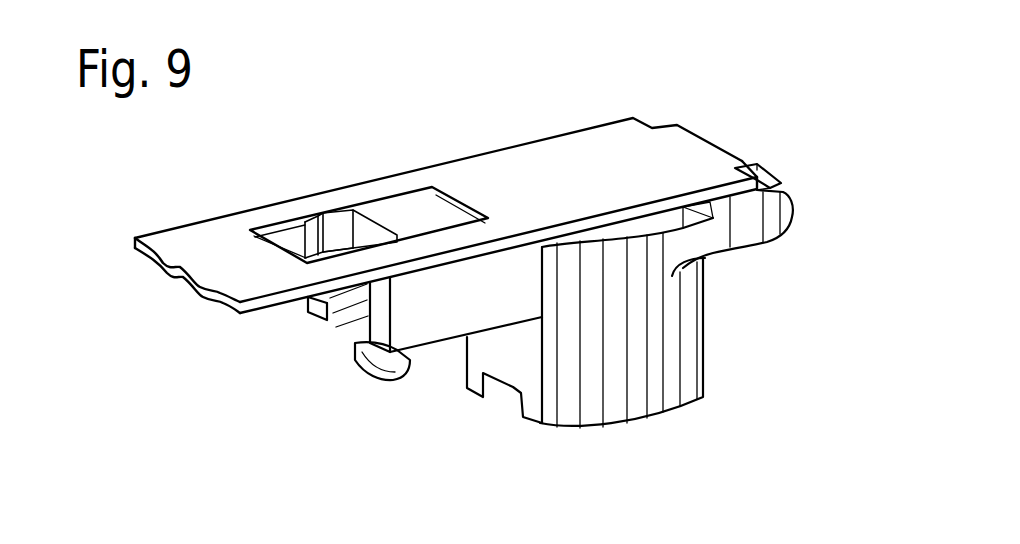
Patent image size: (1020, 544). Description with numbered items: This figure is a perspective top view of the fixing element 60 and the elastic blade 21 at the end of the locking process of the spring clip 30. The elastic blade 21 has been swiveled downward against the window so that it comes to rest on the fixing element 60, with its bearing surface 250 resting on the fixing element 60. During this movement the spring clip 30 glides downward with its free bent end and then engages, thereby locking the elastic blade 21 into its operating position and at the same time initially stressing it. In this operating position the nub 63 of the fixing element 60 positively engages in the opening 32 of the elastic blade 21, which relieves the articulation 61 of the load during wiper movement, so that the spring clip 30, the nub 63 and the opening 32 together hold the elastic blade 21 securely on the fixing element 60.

The elastic blade 21 is at (587, 143).
The opening 32 is at (458, 195).
The nub 63 is at (403, 210).
The articulation 61 is at (760, 149).
The bearing surface 250 is at (768, 184).
The spring clip 30 is at (352, 300).
The fixing element 60 is at (662, 402).